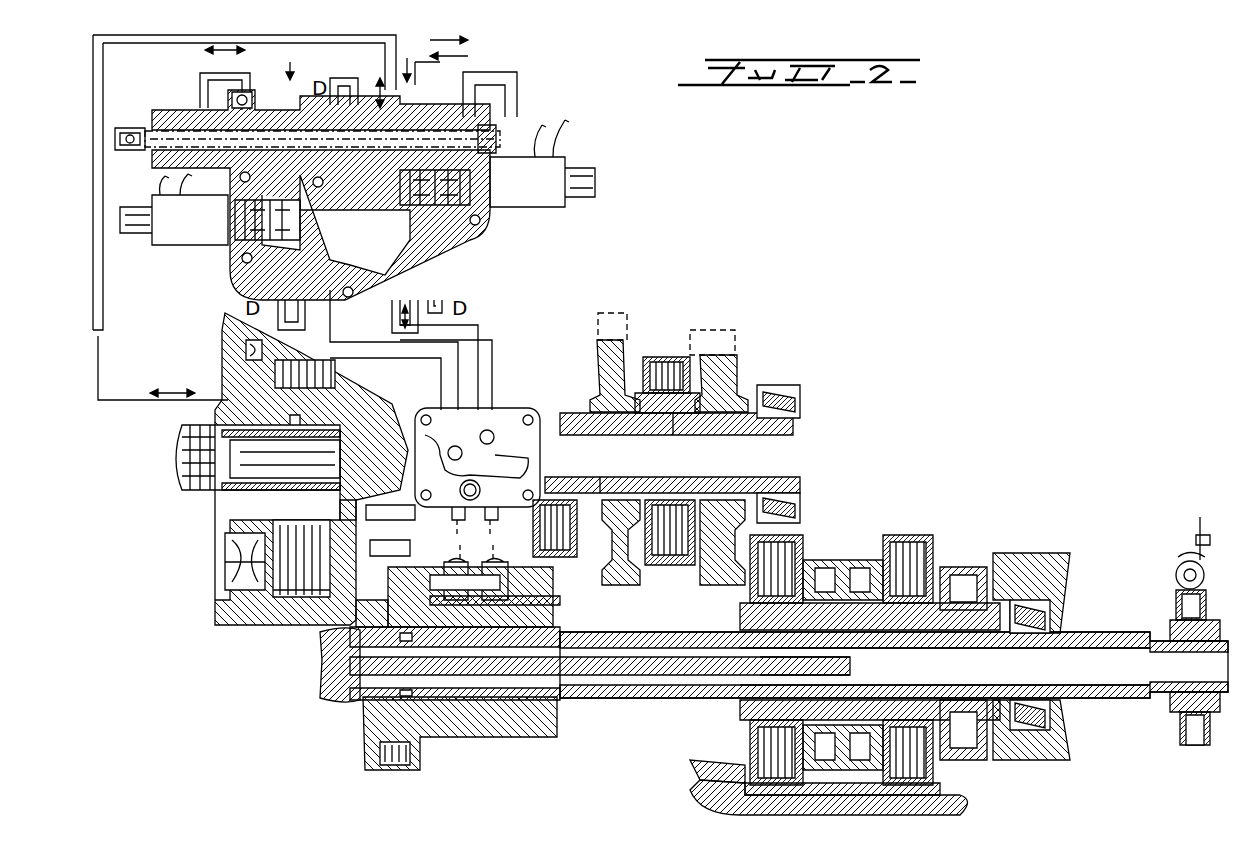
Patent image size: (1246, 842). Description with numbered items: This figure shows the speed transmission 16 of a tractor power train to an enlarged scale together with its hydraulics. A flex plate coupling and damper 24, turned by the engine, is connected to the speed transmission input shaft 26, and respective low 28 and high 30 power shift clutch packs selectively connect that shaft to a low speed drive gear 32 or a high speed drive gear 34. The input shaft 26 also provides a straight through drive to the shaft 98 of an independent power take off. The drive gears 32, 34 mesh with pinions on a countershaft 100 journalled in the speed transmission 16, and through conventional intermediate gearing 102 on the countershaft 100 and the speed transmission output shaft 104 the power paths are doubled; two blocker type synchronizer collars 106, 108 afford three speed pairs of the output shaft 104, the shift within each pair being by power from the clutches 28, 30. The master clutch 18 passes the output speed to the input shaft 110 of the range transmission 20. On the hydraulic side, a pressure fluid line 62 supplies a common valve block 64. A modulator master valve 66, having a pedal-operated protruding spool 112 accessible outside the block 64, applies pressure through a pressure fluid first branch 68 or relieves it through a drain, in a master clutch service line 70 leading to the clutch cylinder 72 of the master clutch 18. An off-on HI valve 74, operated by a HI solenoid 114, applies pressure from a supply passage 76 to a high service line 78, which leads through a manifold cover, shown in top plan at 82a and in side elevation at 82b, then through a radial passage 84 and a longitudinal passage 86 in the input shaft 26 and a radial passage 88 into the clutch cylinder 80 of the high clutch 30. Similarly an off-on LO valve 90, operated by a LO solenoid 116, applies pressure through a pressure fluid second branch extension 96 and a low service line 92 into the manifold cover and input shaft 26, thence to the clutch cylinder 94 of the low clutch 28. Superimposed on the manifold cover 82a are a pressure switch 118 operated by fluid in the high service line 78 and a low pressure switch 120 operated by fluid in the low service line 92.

The speed transmission 16 is at (458, 738).
The manual master clutch 18 is at (300, 580).
The range transmission 20 is at (198, 507).
The flex plate coupling and damper 24 is at (1178, 556).
The speed transmission input shaft 26 is at (1125, 697).
The low power shift clutch pack 28 is at (905, 548).
The high power shift clutch pack 30 is at (800, 545).
The low speed drive gear 32 is at (985, 770).
The high speed drive gear 34 is at (698, 765).
The pressure fluid line 62 is at (425, 72).
The common valve block 64 is at (292, 64).
The modulator master valve 66 is at (418, 120).
The pressure fluid first branch 68 is at (402, 115).
The master clutch service line 70 is at (185, 42).
The clutch cylinder 72 is at (225, 556).
The off-on HI valve 74 is at (398, 186).
The supply passage 76 is at (490, 122).
The high service line 78 is at (486, 328).
The clutch cylinder of the high clutch 80 is at (826, 754).
The manifold cover (top plan) 82a is at (515, 408).
The manifold cover (side elevation) 82b is at (545, 600).
The radial passage 84 is at (540, 628).
The longitudinal passage 86 is at (618, 650).
The radial passage 88 is at (845, 560).
The off-on LO valve 90 is at (292, 198).
The low service line 92 is at (372, 362).
The clutch cylinder for the low clutch 94 is at (875, 730).
The pressure fluid second branch extension 96 is at (340, 272).
The shaft of an independent power take off 98 is at (338, 700).
The countershaft 100 is at (700, 800).
The intermediate gearing 102 is at (622, 335).
The speed transmission output shaft 104 is at (568, 478).
The blocker type synchronizer collar 106 is at (652, 355).
The blocker type synchronizer collar 108 is at (495, 589).
The input shaft of the range transmission 110 is at (182, 435).
The pedal-operated protruding spool 112 is at (128, 130).
The HI solenoid 114 is at (512, 172).
The LO solenoid 116 is at (156, 204).
The pressure switch 118 is at (494, 438).
The low pressure switch 120 is at (476, 473).